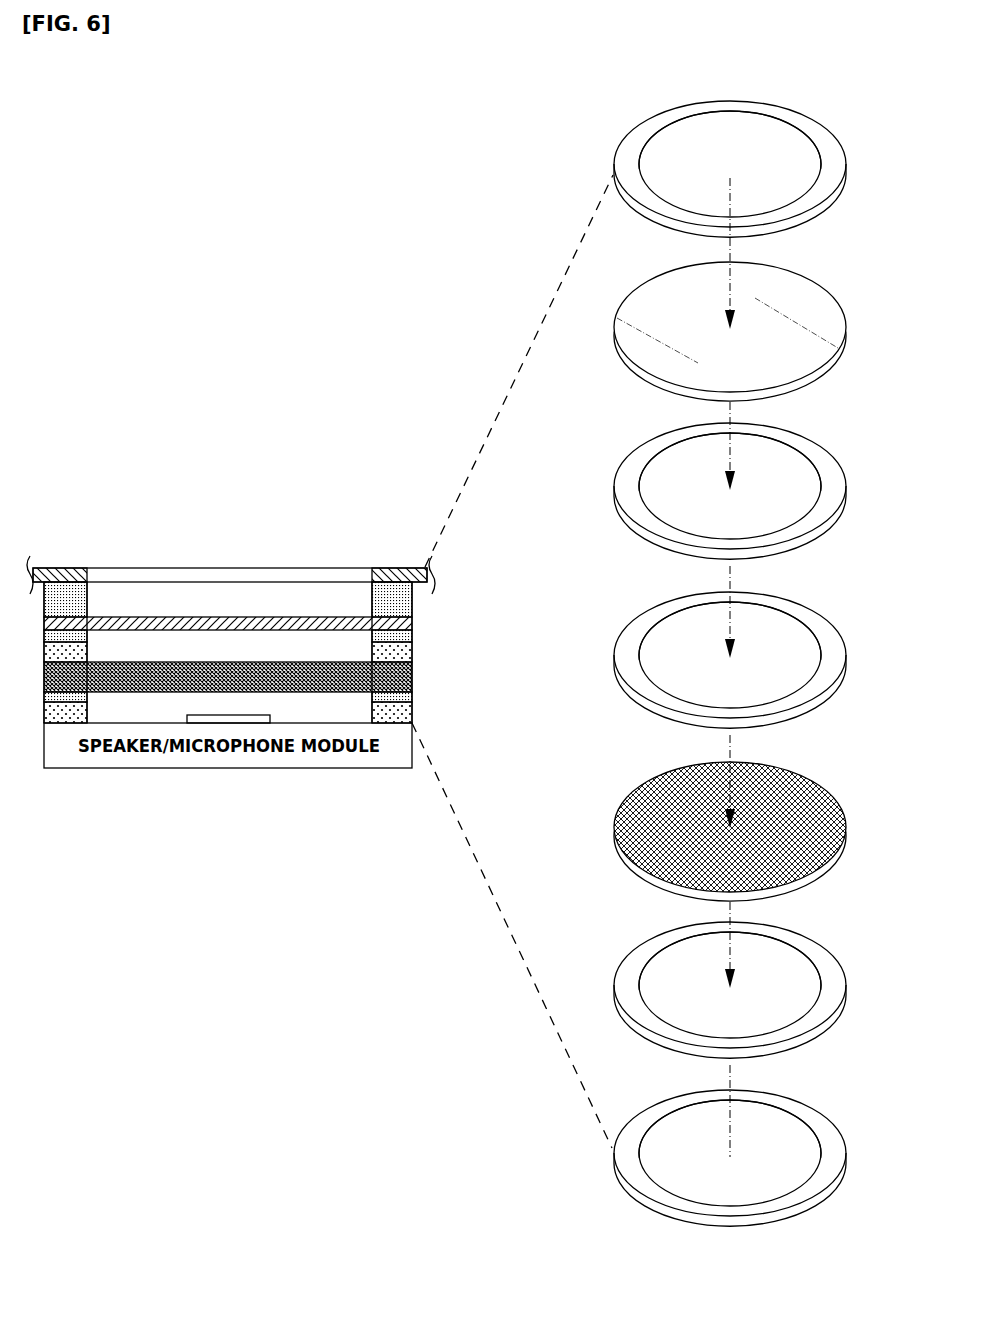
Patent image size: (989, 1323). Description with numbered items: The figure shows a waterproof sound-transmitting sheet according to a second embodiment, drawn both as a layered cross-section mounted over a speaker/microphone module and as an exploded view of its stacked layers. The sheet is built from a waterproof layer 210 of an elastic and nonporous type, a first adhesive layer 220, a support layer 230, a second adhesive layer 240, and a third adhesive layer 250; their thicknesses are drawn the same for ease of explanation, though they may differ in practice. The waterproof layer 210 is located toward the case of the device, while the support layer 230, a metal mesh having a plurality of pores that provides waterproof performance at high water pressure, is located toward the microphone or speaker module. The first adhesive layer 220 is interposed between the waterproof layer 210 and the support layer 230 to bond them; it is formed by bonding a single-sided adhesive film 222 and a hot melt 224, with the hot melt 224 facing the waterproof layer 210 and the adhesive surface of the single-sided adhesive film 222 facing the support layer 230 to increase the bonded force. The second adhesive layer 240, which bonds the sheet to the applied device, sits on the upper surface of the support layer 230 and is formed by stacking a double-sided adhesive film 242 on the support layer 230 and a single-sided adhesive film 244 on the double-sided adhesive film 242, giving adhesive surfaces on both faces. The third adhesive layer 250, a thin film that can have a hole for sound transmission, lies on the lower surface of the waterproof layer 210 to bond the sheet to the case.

The third adhesive layer 250 is at (393, 596).
The waterproof layer 210 is at (414, 623).
The first adhesive layer 220 is at (453, 563).
The single-sided adhesive film 222 is at (414, 638).
The hot melt 224 is at (414, 652).
The support layer 230 is at (414, 674).
The second adhesive layer 240 is at (453, 959).
The double-sided adhesive film 242 is at (414, 697).
The single-sided adhesive film 244 is at (414, 719).